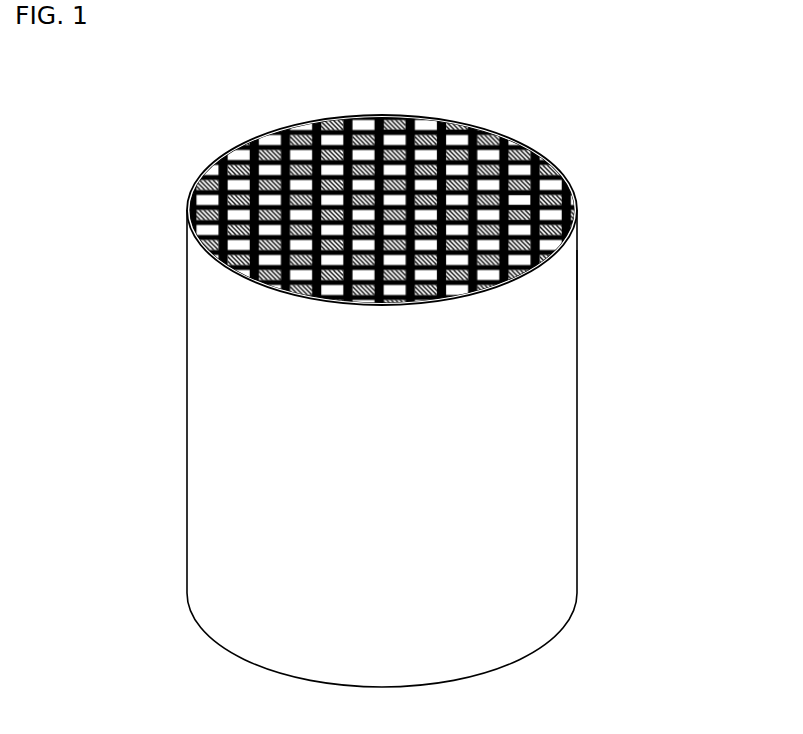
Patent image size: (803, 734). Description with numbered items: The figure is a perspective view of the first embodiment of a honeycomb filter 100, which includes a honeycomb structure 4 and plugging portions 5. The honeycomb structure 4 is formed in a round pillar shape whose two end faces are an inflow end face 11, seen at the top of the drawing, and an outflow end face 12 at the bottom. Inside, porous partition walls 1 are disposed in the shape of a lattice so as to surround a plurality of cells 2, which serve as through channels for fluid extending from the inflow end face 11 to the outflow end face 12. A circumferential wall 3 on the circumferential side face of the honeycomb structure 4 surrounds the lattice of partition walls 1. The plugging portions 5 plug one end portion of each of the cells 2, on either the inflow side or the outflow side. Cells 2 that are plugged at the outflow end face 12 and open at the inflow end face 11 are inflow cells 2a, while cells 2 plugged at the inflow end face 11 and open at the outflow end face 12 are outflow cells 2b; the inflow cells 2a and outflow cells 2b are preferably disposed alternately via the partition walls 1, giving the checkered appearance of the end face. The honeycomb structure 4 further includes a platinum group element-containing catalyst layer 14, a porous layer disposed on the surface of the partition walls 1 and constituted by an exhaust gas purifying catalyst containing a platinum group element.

The honeycomb filter 100 is at (712, 60).
The partition walls 1 is at (500, 153).
The cells 2 is at (583, 157).
The inflow cells 2a is at (515, 200).
The outflow cells 2b is at (533, 215).
The circumferential wall 3 is at (543, 342).
The honeycomb structure 4 is at (579, 250).
The plugging portions 5 is at (418, 126).
The inflow end face 11 is at (265, 133).
The outflow end face 12 is at (212, 645).
The platinum group element-containing catalyst layer 14 is at (352, 120).